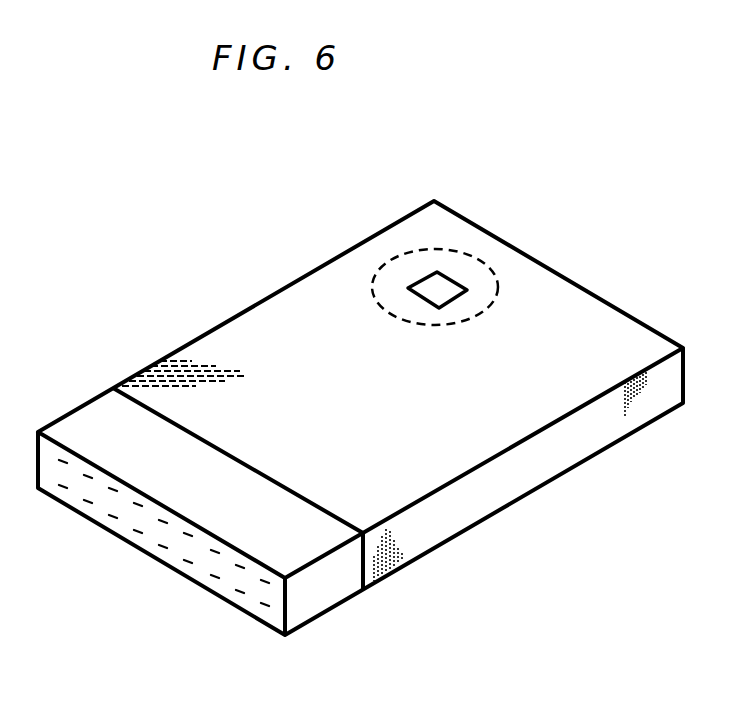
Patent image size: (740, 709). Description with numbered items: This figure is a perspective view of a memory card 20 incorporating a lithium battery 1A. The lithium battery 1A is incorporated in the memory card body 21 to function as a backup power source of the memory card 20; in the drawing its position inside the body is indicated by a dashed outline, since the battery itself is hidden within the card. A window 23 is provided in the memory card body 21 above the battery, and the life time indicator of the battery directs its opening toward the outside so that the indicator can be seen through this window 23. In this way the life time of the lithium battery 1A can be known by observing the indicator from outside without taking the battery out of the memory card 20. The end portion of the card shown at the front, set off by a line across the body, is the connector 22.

The memory card 20 is at (573, 181).
The memory card body 21 is at (540, 467).
The connector 22 is at (320, 600).
The window 23 is at (448, 283).
The lithium battery 1A is at (442, 248).